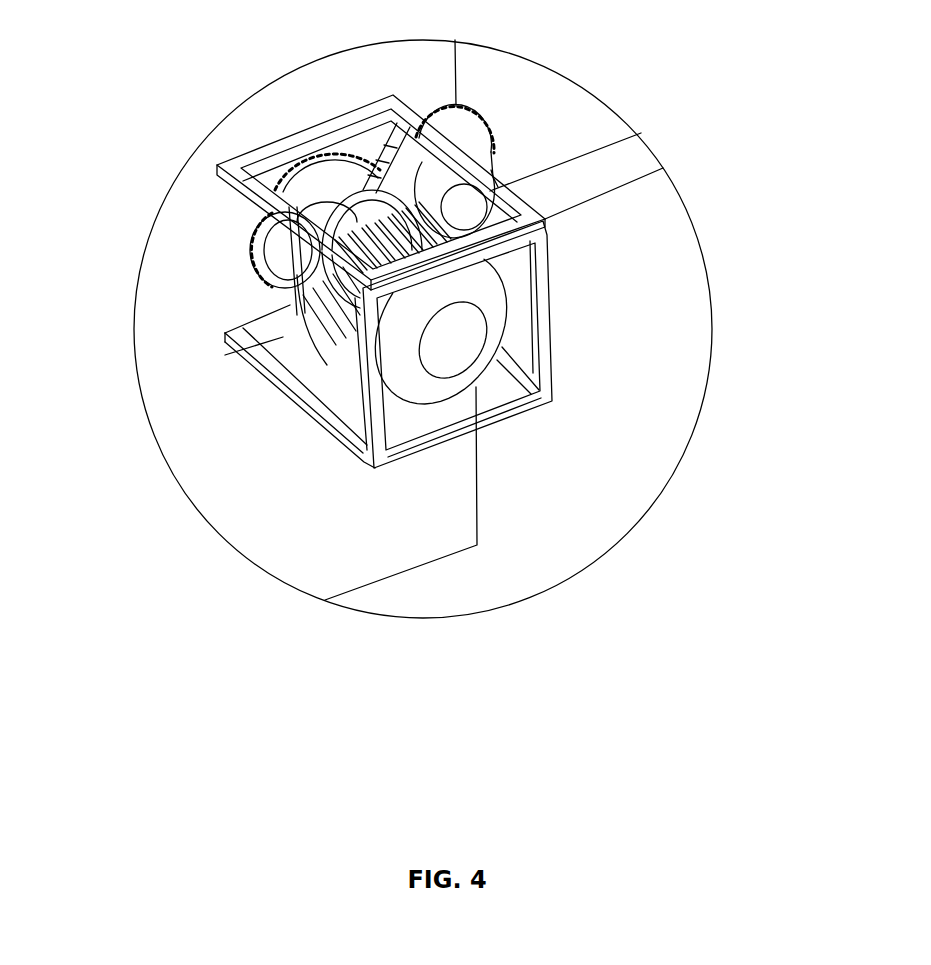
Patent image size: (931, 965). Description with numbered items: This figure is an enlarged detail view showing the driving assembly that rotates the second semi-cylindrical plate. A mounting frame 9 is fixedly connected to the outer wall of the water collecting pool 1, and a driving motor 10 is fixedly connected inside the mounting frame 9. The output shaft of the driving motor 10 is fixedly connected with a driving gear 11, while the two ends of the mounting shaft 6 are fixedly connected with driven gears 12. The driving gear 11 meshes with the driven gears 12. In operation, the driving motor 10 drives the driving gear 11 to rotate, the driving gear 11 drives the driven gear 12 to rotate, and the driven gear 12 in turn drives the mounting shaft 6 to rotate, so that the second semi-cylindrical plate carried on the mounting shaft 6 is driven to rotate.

The water collecting pool 1 is at (274, 493).
The mounting shaft 6 is at (507, 281).
The mounting frame 9 is at (200, 348).
The driving motor 10 is at (243, 244).
The driving gear 11 is at (278, 251).
The driven gear 12 is at (606, 139).